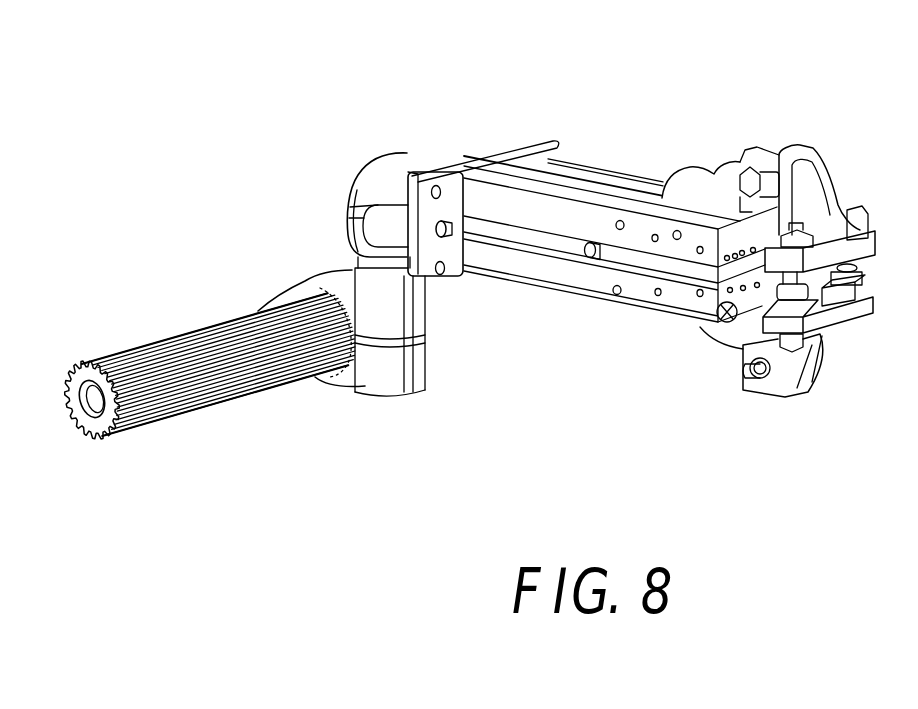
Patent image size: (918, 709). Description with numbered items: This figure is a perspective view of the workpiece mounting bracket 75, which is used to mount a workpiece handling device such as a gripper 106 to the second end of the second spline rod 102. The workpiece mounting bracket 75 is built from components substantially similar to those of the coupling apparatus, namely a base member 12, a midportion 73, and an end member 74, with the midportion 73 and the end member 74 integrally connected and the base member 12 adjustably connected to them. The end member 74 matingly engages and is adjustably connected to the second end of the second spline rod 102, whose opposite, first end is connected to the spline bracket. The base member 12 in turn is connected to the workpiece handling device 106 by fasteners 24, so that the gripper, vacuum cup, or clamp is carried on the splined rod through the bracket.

The base member 12 is at (479, 150).
The fasteners 24 is at (450, 233).
The midportion 73 is at (392, 173).
The end member 74 is at (412, 377).
The workpiece mounting bracket 75 is at (326, 266).
The second spline rod 102 is at (200, 387).
The workpiece handling device or gripper 106 is at (613, 172).